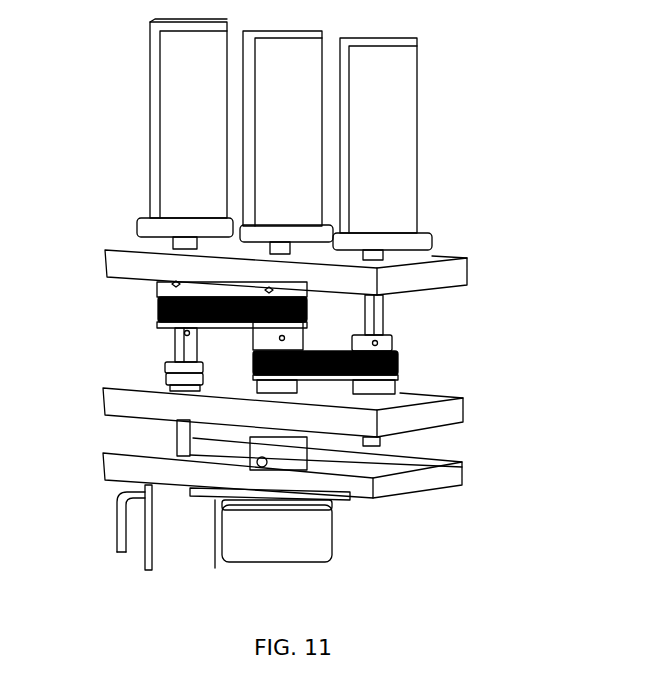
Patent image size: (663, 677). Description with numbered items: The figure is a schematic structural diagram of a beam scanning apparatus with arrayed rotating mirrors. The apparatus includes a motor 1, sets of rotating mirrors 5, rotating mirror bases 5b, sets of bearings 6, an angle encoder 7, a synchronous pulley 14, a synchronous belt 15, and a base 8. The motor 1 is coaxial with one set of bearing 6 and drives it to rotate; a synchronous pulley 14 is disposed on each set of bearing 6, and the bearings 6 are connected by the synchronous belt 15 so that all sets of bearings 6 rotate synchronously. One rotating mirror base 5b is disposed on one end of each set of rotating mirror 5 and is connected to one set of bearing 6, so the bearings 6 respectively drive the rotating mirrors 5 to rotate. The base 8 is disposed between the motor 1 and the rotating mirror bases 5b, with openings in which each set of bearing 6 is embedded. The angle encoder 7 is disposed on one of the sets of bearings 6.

The motor 1 is at (335, 551).
The rotating mirror 5 is at (420, 152).
The rotating mirror base 5b is at (430, 237).
The bearing 6 is at (173, 350).
The angle encoder 7 is at (125, 550).
The base 8 is at (533, 340).
The synchronous pulley 14 is at (400, 342).
The synchronous belt 15 is at (403, 367).